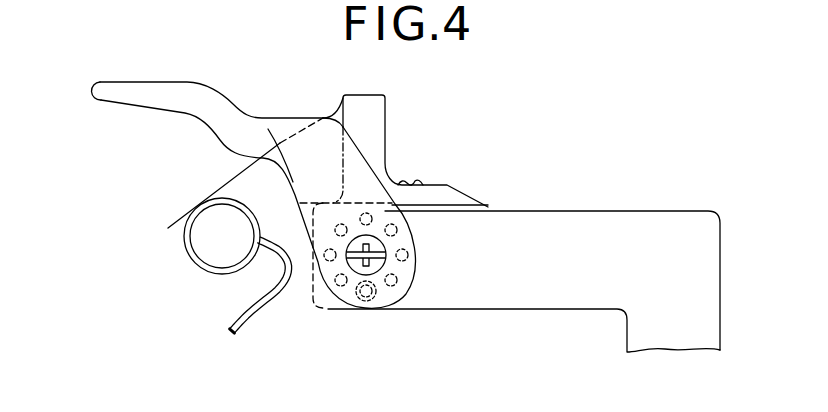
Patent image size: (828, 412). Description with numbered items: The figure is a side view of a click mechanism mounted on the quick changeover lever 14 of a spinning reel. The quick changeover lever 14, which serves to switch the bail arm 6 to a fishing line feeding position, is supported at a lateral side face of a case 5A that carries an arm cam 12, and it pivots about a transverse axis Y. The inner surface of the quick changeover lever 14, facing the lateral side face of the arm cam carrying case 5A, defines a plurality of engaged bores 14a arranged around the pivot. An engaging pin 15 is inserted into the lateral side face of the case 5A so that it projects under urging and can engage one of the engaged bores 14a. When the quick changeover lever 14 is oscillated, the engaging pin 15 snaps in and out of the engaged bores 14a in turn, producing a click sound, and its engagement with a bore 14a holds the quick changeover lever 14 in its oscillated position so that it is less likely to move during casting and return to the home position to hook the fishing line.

The quick changeover lever 14 is at (125, 103).
The engaged bores 14a is at (398, 232).
The arm cam 12 is at (180, 235).
The bail arm 6 is at (230, 317).
The arm cam carrying case 5A is at (550, 211).
The engaging pin 15 is at (383, 306).
The transverse axis Y is at (370, 257).